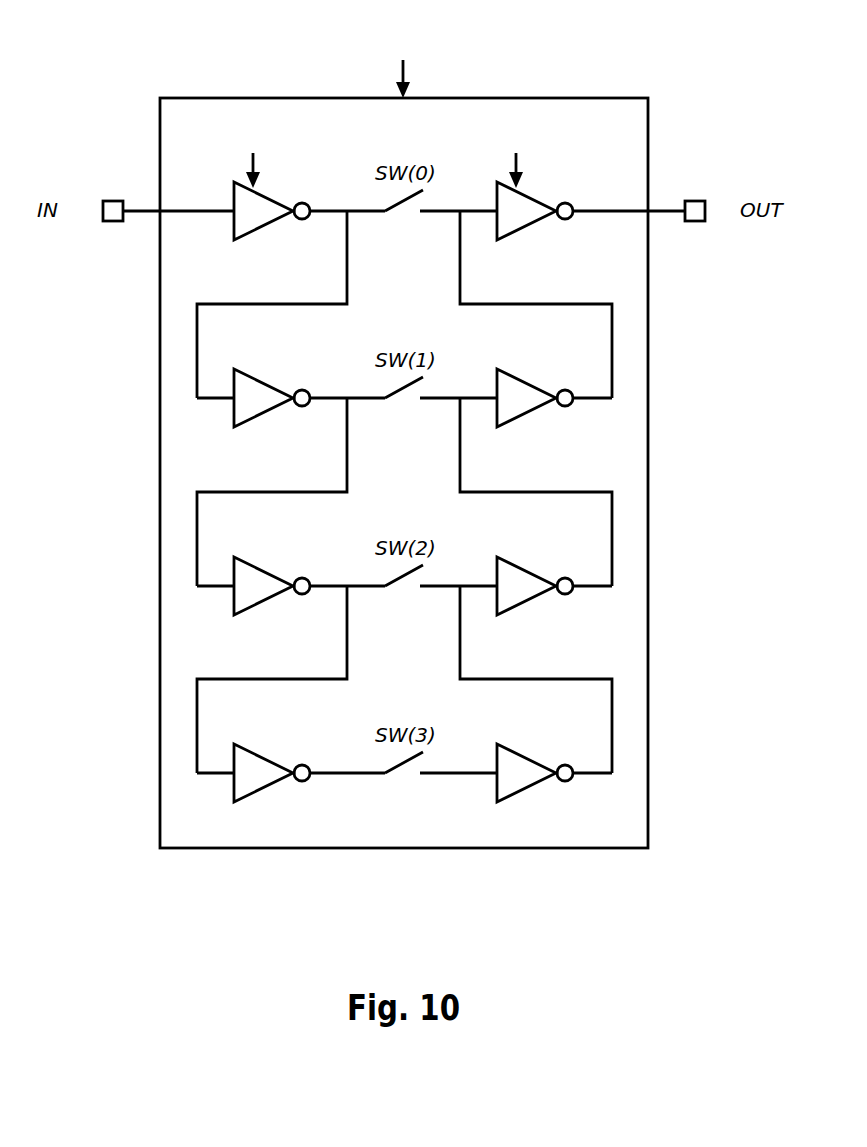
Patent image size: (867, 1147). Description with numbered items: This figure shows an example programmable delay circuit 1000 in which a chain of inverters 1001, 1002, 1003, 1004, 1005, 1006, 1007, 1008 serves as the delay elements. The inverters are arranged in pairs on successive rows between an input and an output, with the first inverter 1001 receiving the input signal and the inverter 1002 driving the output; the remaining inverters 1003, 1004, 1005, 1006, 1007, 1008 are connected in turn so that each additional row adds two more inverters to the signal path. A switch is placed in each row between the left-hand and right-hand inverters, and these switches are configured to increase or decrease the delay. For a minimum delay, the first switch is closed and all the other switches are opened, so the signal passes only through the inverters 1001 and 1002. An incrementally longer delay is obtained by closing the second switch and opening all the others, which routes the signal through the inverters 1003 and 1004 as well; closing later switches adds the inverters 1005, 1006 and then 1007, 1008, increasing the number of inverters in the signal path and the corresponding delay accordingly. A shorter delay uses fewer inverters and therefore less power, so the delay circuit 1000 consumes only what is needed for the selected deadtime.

The delay circuit 1000 is at (605, 98).
The inverter 1001 is at (237, 238).
The inverter 1002 is at (512, 237).
The inverter 1003 is at (237, 425).
The inverter 1004 is at (512, 424).
The inverter 1005 is at (237, 613).
The inverter 1006 is at (512, 612).
The inverter 1007 is at (237, 800).
The inverter 1008 is at (512, 799).